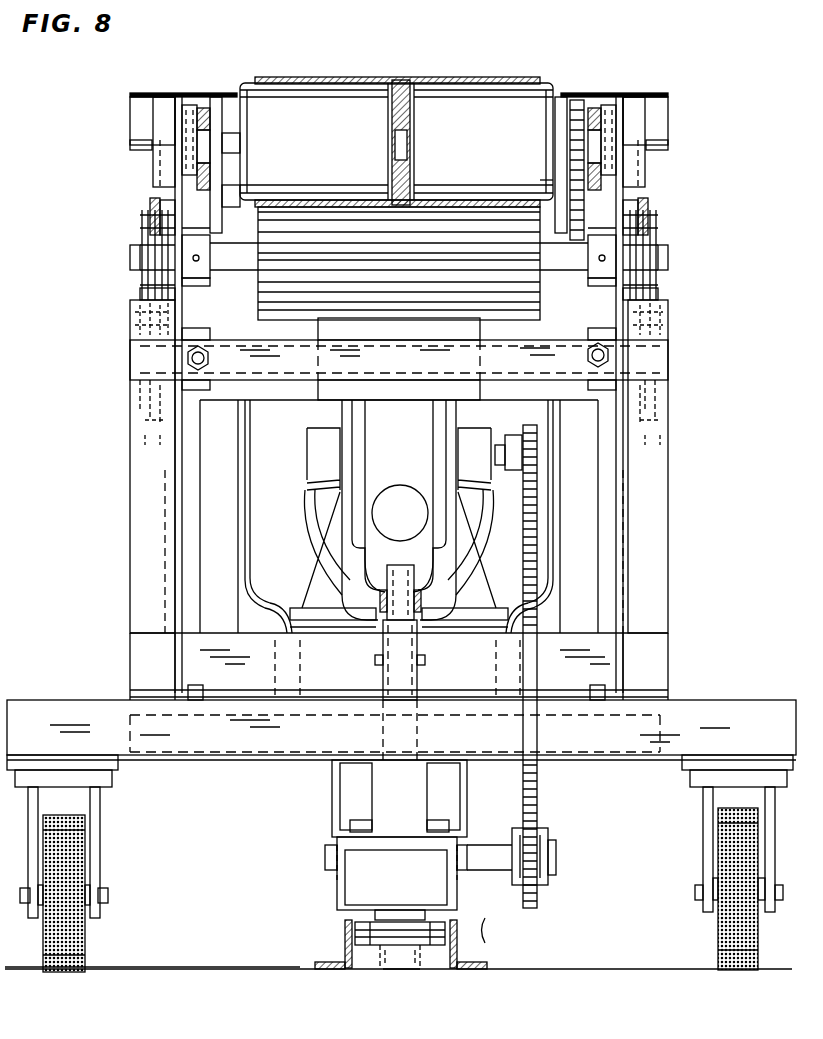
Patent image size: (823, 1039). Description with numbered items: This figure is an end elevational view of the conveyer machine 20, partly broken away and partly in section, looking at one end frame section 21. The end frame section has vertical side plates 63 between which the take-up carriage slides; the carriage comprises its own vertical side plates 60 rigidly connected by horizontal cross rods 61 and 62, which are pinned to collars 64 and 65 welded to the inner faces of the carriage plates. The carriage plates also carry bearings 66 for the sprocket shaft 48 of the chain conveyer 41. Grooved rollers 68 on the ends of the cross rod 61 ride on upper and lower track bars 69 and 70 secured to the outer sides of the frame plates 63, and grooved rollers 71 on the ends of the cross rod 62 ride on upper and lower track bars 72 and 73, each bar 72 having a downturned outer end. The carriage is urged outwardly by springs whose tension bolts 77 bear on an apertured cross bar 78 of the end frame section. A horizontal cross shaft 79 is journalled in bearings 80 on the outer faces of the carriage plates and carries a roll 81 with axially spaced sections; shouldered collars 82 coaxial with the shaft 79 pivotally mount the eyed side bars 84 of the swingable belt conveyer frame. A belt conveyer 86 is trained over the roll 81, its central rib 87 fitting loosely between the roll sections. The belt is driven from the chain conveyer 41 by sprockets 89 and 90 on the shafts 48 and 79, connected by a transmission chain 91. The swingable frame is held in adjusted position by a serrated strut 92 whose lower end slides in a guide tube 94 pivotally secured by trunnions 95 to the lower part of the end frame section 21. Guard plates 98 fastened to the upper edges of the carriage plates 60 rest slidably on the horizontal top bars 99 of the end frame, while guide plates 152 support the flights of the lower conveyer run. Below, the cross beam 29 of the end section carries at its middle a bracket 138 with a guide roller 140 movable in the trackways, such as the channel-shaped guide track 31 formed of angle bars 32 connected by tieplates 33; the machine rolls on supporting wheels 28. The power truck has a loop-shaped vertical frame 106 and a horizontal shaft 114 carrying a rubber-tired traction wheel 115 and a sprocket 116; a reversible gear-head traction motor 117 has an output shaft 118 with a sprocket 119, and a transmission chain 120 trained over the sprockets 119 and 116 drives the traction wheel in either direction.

The frame assembly 20 is at (690, 545).
The end frame section 21 is at (660, 572).
The wheel 28 is at (100, 858).
The cross beam 29 is at (737, 700).
The channel-shaped guide track 31 is at (493, 933).
The angle bar 32 is at (325, 962).
The tieplate 33 is at (398, 952).
The chain conveyer 41 is at (530, 300).
The sprocket shaft 48 is at (232, 190).
The carriage side plate 60 is at (236, 423).
The cross rod 61 is at (300, 380).
The cross rod 62 is at (130, 257).
The frame section side plate 63 is at (160, 448).
The collar 64 is at (202, 340).
The collar 65 is at (206, 285).
The bearing 66 is at (210, 222).
The grooved roller 68 is at (140, 395).
The upper track bar 69 is at (668, 312).
The lower track bar 70 is at (150, 422).
The grooved roller 71 is at (140, 220).
The upper track bar 72 is at (150, 207).
The lower track bar 73 is at (140, 294).
The tension bolt 77 is at (205, 368).
The apertured cross bar 78 is at (250, 412).
The cross shaft 79 is at (228, 133).
The bearing 80 is at (163, 118).
The roll 81 is at (483, 97).
The shouldered collar 82 is at (190, 105).
The eyed side bar 84 is at (203, 108).
The belt conveyer 86 is at (437, 78).
The belt rib 87 is at (402, 80).
The sprocket 89 is at (575, 250).
The sprocket 90 is at (563, 97).
The transmission chain 91 is at (553, 165).
The strut 92 is at (390, 580).
The guide tube 94 is at (410, 637).
The trunnion 95 is at (425, 661).
The guard plate 98 is at (140, 94).
The top bar 99 is at (135, 148).
The truck frame 106 is at (245, 580).
The wheel shaft 114 is at (483, 850).
The traction wheel 115 is at (410, 970).
The traction wheel sprocket 116 is at (545, 878).
The traction motor 117 is at (318, 515).
The motor output shaft 118 is at (500, 445).
The motor sprocket 119 is at (513, 438).
The transmission chain 120 is at (540, 778).
The bracket 138 is at (362, 873).
The guide roller 140 is at (345, 920).
The guide plate 152 is at (400, 392).